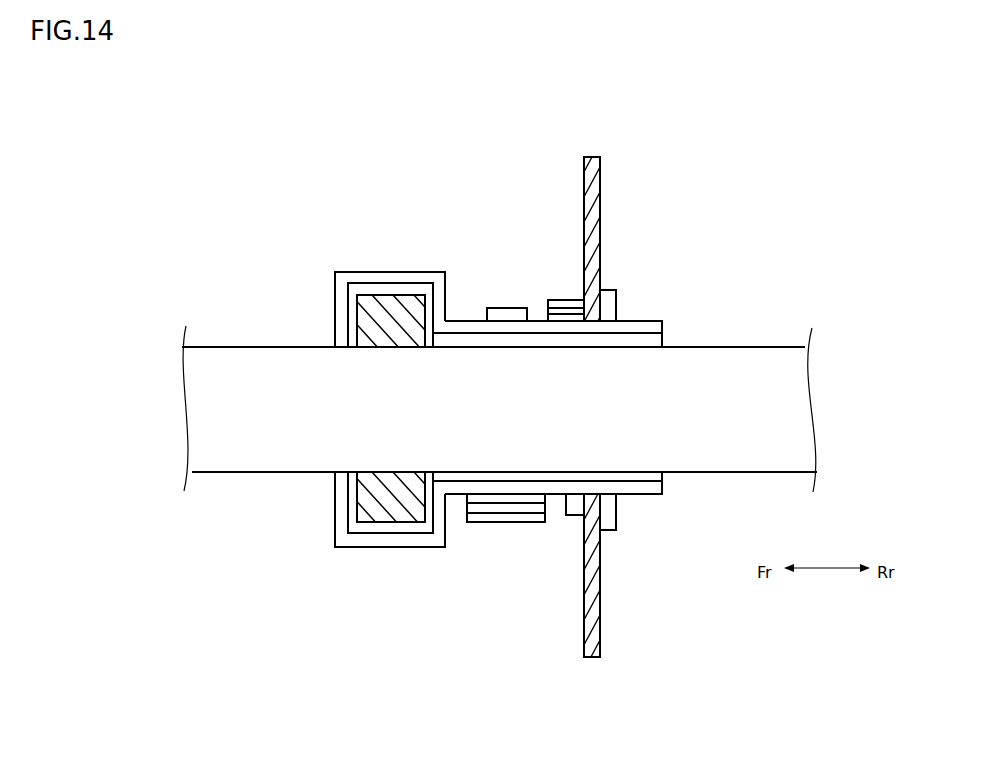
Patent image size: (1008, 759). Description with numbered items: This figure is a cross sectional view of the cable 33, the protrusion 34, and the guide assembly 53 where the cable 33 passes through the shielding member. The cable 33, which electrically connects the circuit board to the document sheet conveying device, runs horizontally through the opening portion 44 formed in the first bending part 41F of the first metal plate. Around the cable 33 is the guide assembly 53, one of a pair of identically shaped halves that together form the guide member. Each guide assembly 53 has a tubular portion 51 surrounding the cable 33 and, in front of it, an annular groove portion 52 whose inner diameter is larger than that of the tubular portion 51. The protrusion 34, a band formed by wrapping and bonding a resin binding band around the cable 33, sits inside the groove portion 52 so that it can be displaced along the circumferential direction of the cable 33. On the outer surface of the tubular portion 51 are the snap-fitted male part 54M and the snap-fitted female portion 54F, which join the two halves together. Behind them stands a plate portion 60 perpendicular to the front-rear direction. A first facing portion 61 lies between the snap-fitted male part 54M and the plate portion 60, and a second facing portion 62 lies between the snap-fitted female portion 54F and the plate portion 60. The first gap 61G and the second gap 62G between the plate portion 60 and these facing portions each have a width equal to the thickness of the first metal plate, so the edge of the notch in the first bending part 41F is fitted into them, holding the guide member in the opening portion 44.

The cable 33 is at (738, 347).
The protrusion 34 is at (375, 297).
The opening portion 44 is at (596, 322).
The tubular portion 51 is at (648, 320).
The annular groove portion 52 is at (410, 270).
The guide assembly 53 is at (326, 375).
The snap-fitted male part 54M is at (506, 306).
The snap-fitted female portion 54F is at (540, 523).
The plate portion 60 is at (611, 290).
The first facing portion 61 is at (563, 298).
The first gap 61G is at (583, 285).
The second facing portion 62 is at (577, 516).
The second gap 62G is at (597, 516).
The first bending part 41F is at (603, 215).